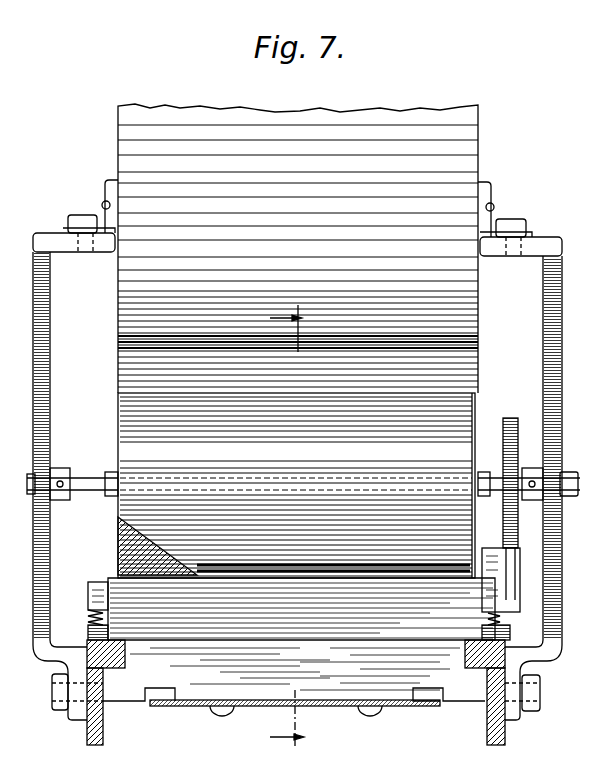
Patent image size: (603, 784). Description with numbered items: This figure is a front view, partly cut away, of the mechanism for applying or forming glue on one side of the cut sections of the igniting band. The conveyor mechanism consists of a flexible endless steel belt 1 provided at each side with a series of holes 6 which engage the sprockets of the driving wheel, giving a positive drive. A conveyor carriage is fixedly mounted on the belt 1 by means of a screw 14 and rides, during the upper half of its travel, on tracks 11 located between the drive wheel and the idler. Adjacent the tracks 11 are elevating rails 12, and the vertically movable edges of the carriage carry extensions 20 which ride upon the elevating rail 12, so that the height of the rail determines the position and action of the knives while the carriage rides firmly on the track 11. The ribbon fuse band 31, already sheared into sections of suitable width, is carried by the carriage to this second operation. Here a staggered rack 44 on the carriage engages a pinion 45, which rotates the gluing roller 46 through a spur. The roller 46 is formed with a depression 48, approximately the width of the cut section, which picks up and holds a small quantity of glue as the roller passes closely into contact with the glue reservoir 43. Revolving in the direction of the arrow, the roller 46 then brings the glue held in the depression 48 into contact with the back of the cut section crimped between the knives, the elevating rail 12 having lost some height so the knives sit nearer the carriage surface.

The steel belt 1 is at (402, 707).
The holes 6 is at (160, 733).
The tracks 11 is at (113, 652).
The elevating rails 12 is at (92, 641).
The screw 14 is at (222, 712).
The extensions 20 is at (90, 618).
The ribbon fuse band 31 is at (115, 580).
The glue reservoir 43 is at (150, 150).
The staggered rack 44 is at (512, 568).
The pinion 45 is at (508, 418).
The gluing roller 46 is at (138, 425).
The depression 48 is at (155, 575).